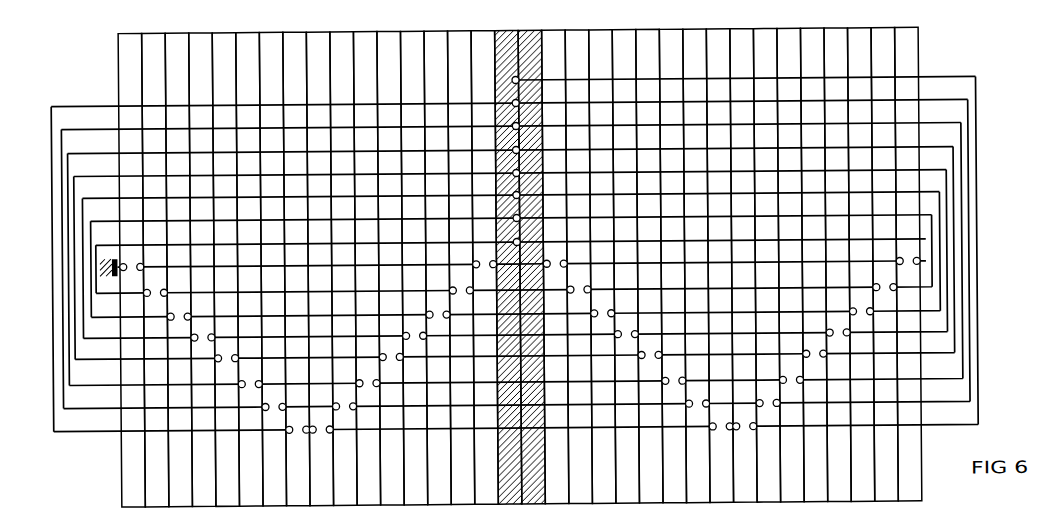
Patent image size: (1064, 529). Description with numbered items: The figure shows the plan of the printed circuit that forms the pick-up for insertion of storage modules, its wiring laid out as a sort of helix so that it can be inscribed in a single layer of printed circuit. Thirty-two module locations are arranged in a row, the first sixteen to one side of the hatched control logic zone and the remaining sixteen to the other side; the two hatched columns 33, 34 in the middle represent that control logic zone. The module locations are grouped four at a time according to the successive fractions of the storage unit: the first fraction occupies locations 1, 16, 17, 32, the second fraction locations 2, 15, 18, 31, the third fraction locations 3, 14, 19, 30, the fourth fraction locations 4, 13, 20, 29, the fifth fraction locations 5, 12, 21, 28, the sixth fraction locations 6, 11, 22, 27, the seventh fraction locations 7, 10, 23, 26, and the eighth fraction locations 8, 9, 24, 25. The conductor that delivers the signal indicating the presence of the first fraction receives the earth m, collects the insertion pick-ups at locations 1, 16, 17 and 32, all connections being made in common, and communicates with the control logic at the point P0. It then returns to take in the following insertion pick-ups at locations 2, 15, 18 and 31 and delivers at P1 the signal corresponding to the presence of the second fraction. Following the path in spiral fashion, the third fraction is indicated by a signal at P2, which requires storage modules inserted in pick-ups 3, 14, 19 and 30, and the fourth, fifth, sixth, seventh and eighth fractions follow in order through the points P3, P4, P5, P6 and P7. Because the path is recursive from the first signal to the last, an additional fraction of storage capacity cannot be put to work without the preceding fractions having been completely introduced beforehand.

The module location 1 is at (131, 270).
The module location 2 is at (155, 270).
The module location 3 is at (178, 270).
The module location 4 is at (202, 270).
The module location 5 is at (225, 270).
The module location 6 is at (249, 270).
The module location 7 is at (272, 269).
The module location 8 is at (296, 269).
The module location 9 is at (319, 269).
The module location 10 is at (343, 269).
The module location 11 is at (366, 269).
The module location 12 is at (390, 268).
The module location 13 is at (414, 268).
The module location 14 is at (437, 268).
The module location 15 is at (461, 268).
The module location 16 is at (484, 268).
The module location 17 is at (555, 267).
The module location 18 is at (578, 267).
The module location 19 is at (602, 267).
The module location 20 is at (625, 267).
The module location 21 is at (649, 266).
The module location 22 is at (672, 266).
The module location 23 is at (696, 266).
The module location 24 is at (719, 266).
The module location 25 is at (743, 266).
The module location 26 is at (766, 265).
The module location 27 is at (790, 265).
The module location 28 is at (814, 265).
The module location 29 is at (837, 265).
The module location 30 is at (861, 265).
The module location 31 is at (884, 265).
The module location 32 is at (908, 264).
The center conductor column 33 is at (508, 267).
The center conductor column 34 is at (531, 267).
The control logic connection point P0 is at (511, 233).
The control logic connection point P1 is at (510, 209).
The control logic connection point P2 is at (510, 186).
The control logic connection point P3 is at (510, 164).
The control logic connection point P4 is at (510, 141).
The control logic connection point P5 is at (511, 117).
The control logic connection point P6 is at (509, 93).
The control logic connection point P7 is at (734, 69).
The earth m is at (104, 284).